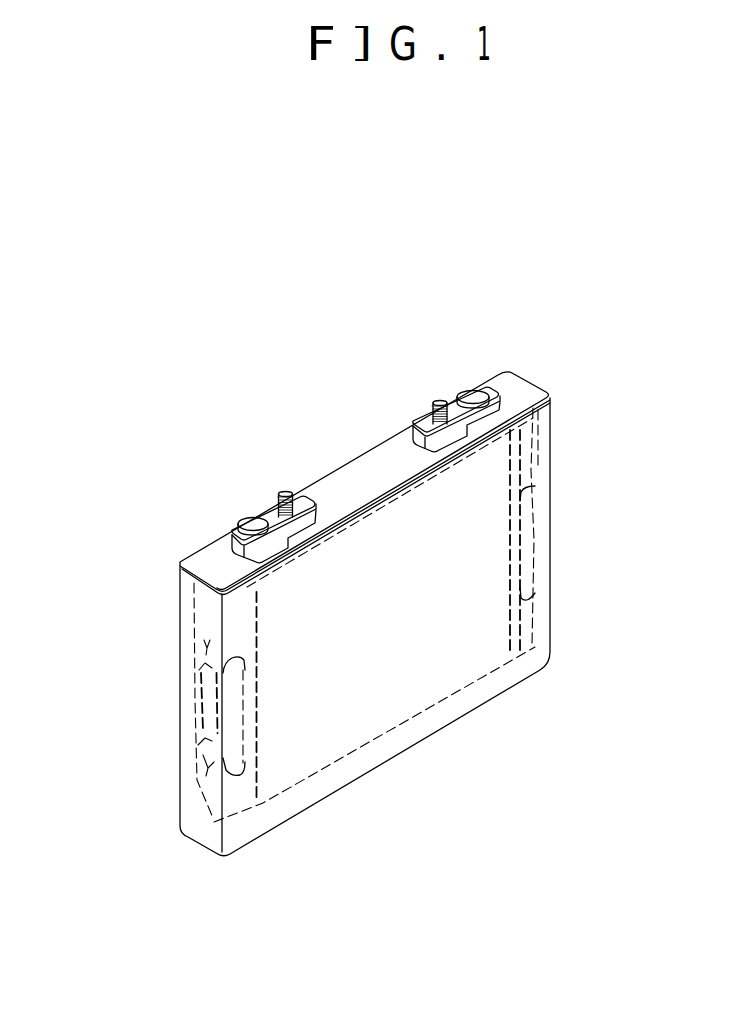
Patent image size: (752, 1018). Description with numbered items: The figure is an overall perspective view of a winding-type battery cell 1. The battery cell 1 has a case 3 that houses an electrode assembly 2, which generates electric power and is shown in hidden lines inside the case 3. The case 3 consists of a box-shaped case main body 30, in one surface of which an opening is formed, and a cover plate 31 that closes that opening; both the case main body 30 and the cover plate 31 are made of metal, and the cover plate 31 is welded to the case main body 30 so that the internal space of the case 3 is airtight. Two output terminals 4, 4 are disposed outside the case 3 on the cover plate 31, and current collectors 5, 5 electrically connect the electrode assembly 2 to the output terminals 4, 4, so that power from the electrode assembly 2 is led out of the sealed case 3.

The battery cell 1 is at (538, 354).
The electrode assembly 2 is at (447, 626).
The case 3 is at (621, 368).
The case main body 30 is at (493, 463).
The cover plate 31 is at (526, 396).
The output terminal 4 is at (287, 491).
The current collector 5 is at (203, 622).